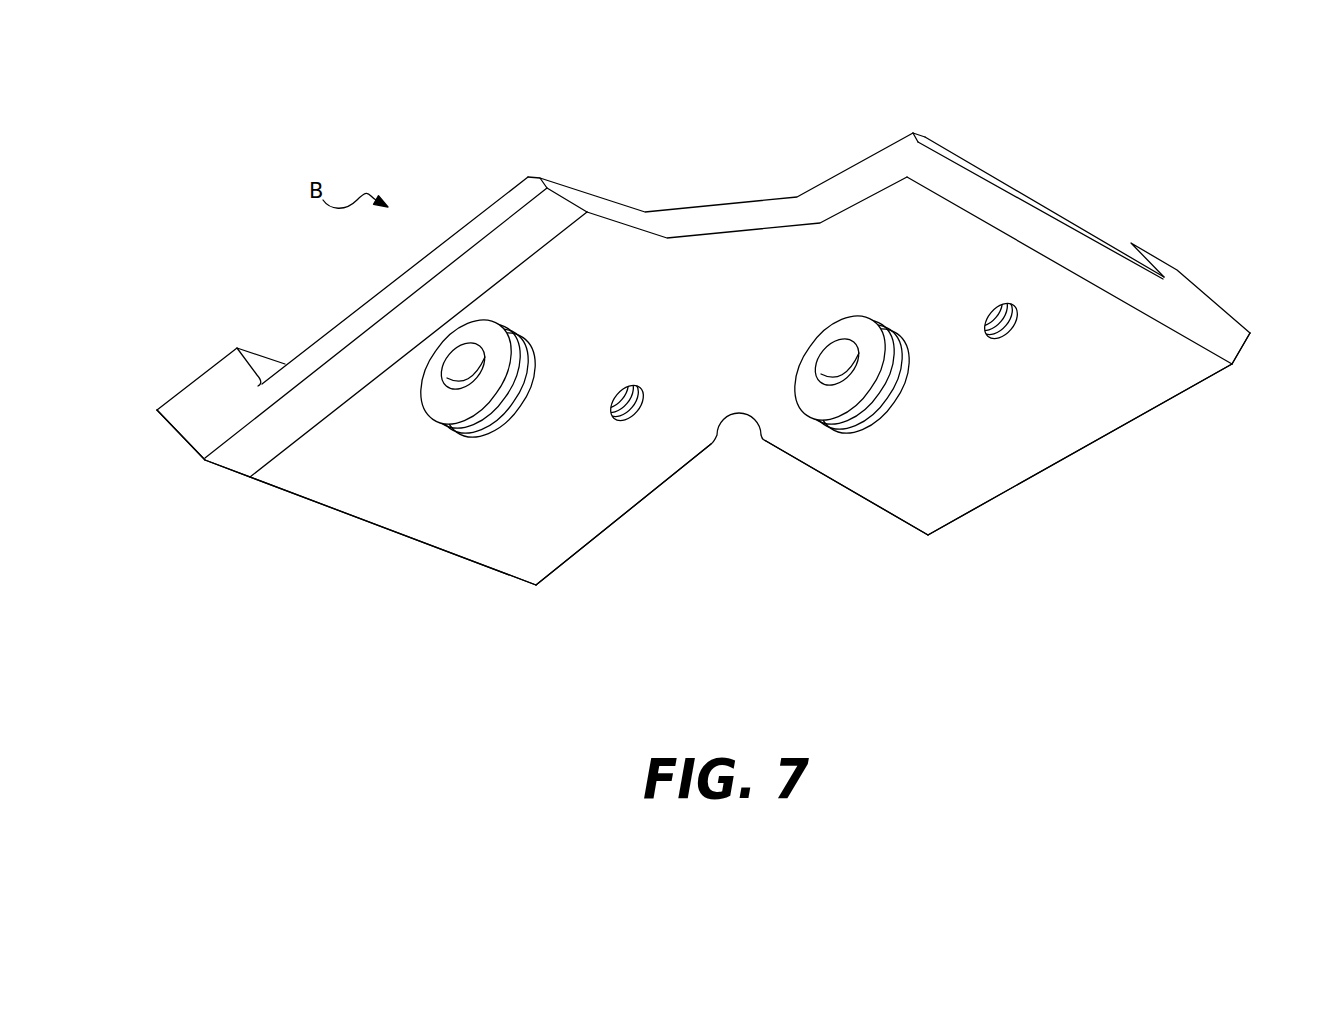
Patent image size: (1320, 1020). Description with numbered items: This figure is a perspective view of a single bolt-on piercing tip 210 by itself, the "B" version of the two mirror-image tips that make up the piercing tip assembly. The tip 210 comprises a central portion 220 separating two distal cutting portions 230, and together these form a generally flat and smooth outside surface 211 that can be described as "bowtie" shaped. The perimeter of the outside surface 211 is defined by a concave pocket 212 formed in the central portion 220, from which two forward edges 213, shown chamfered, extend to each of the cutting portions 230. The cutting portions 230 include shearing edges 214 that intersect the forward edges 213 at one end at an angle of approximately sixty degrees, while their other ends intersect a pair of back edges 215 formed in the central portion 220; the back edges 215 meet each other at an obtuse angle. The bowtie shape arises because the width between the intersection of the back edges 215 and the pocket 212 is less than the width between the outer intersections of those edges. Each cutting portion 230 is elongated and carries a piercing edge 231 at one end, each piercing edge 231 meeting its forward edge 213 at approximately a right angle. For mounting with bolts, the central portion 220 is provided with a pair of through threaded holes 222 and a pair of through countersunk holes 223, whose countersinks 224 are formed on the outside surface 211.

The piercing tip 210 is at (347, 589).
The outside surface 211 is at (568, 267).
The concave pocket 212 is at (733, 229).
The forward edges 213 is at (374, 382).
The shearing edges 214 is at (340, 512).
The back edges 215 is at (598, 535).
The central portion 220 is at (928, 146).
The through threaded holes 222 is at (615, 416).
The through countersunk holes 223 is at (482, 352).
The countersinks 224 is at (453, 433).
The cutting portions 230 is at (215, 364).
The piercing edge 231 is at (179, 434).